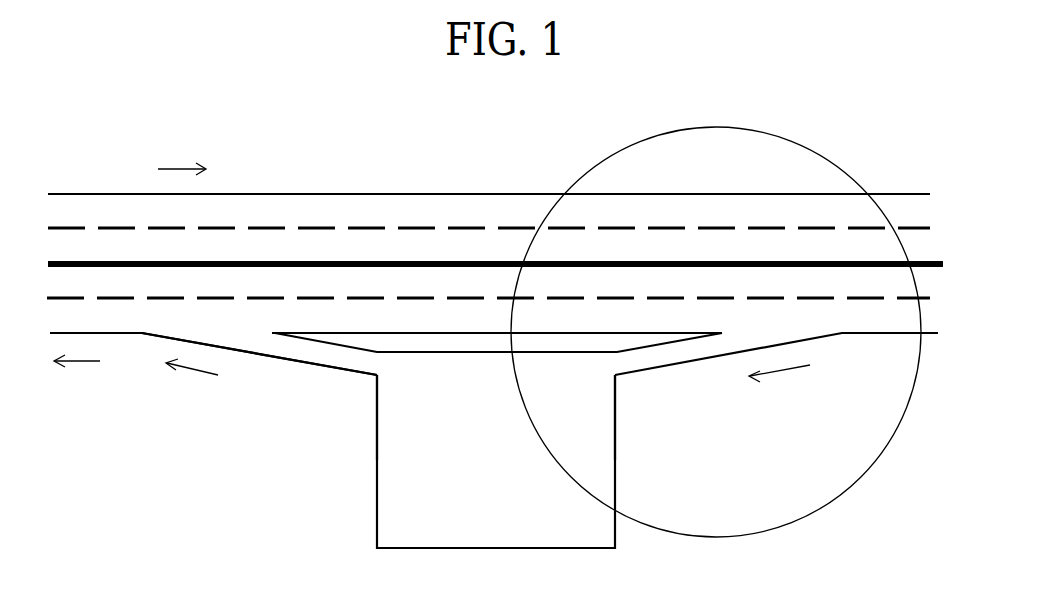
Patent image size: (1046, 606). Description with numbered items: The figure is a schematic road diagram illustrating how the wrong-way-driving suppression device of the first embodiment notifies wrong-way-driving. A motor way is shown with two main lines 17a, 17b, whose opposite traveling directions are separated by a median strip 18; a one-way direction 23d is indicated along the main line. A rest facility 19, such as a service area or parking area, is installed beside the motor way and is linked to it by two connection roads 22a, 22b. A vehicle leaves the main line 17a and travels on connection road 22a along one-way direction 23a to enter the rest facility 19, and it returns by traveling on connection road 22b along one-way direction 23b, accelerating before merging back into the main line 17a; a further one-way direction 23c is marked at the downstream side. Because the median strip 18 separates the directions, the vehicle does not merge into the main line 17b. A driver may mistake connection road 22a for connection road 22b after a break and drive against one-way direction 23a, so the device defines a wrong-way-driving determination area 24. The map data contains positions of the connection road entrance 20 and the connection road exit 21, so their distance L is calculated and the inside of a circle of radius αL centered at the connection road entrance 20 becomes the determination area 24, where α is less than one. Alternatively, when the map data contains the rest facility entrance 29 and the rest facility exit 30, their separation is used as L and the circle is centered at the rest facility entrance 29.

The main line 17a is at (268, 287).
The main line 17b is at (375, 210).
The median strip 18 is at (943, 262).
The rest facility 19 is at (438, 518).
The connection road entrance 20 is at (747, 334).
The connection road exit 21 is at (235, 333).
The connection road 22a is at (648, 363).
The connection road 22b is at (285, 350).
The one-way direction 23a is at (810, 365).
The one-way direction 23b is at (218, 375).
The one-way direction 23c is at (92, 361).
The one-way direction 23d is at (165, 168).
The wrong-way-driving determination area 24 is at (860, 482).
The rest facility entrance 29 is at (615, 365).
The rest facility exit 30 is at (377, 365).